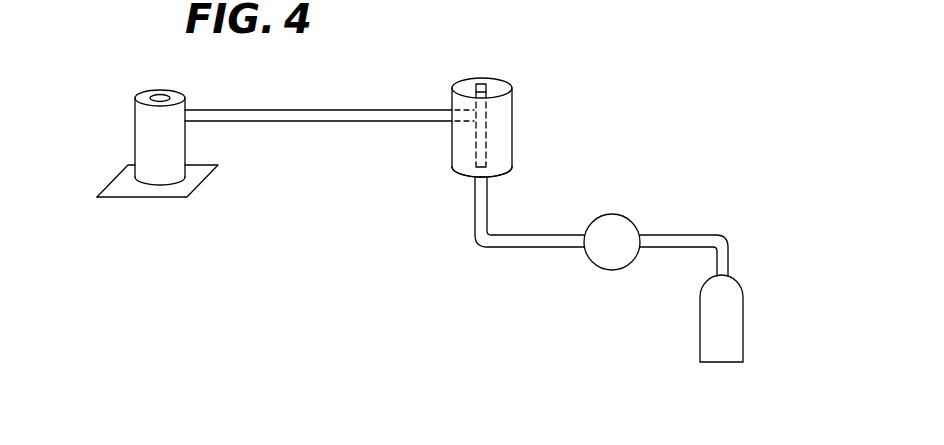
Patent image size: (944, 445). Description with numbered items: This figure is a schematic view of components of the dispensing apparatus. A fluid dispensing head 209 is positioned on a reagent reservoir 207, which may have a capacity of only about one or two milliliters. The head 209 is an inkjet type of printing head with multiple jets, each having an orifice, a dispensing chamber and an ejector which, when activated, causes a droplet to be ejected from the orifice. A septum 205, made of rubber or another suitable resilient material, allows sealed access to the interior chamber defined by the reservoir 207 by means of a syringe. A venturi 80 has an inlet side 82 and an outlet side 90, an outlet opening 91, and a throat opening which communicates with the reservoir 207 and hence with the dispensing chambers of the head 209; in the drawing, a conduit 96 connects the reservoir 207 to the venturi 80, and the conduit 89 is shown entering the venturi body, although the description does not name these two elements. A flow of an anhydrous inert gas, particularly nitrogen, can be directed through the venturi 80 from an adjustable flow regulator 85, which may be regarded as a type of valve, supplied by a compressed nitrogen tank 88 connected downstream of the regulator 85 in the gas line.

The septum 205 is at (156, 95).
The reagent reservoir 207 is at (116, 143).
The fluid dispensing head 209 is at (216, 192).
The conduit tube 96 is at (353, 122).
The tube end within reservoir 89 is at (453, 121).
The outlet opening 91 is at (480, 85).
The outlet side 90 is at (513, 90).
The venturi 80 is at (526, 119).
The inlet side 82 is at (512, 165).
The adjustable flow regulator 85 is at (583, 270).
The compressed nitrogen tank 88 is at (710, 300).